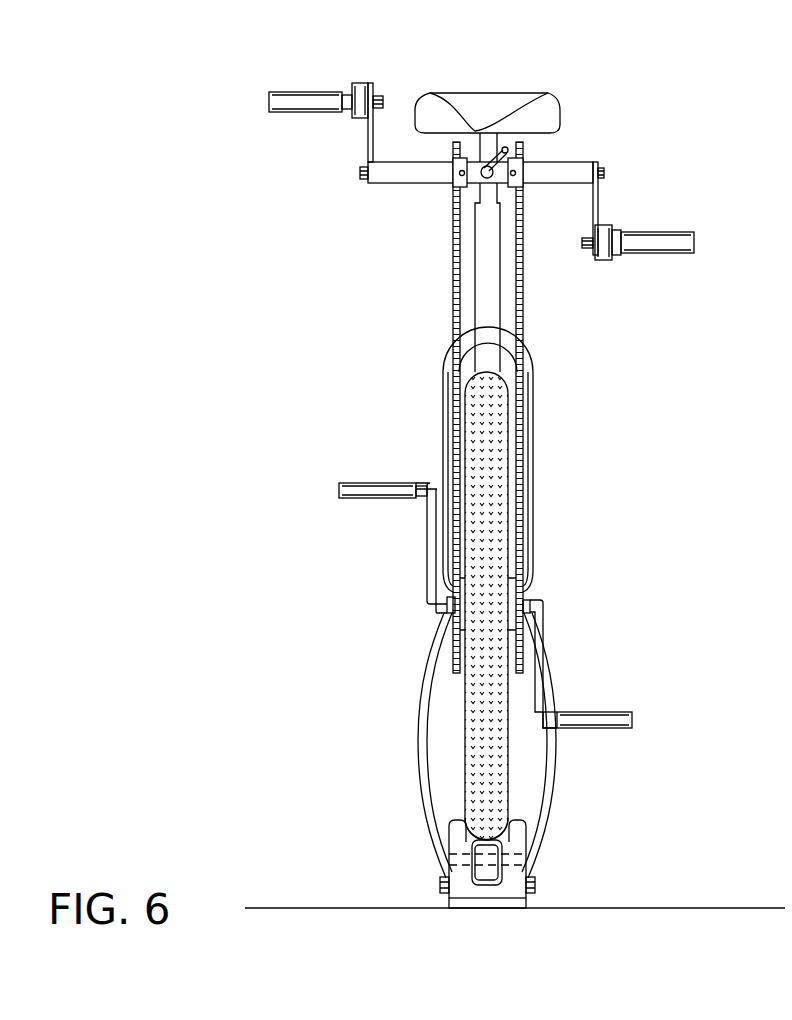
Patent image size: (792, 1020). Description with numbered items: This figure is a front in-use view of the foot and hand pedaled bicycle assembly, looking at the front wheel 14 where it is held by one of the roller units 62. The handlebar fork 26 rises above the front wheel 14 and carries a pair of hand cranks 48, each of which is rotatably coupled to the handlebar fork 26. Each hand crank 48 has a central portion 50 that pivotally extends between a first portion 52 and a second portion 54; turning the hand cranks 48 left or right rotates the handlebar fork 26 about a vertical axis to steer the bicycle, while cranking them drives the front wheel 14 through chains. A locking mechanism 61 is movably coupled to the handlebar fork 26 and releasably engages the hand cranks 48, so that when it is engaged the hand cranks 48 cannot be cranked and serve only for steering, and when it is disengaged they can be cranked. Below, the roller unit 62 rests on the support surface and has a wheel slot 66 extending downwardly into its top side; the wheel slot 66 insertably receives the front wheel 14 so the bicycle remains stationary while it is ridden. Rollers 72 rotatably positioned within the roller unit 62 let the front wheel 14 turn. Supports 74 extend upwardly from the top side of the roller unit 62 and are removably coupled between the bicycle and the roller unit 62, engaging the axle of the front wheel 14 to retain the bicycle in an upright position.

The front wheel 14 is at (482, 425).
The handlebar fork 26 is at (493, 275).
The hand cranks 48 is at (427, 131).
The central portion 50 is at (372, 140).
The first portion 52 is at (417, 187).
The second portion 54 is at (287, 110).
The locking mechanism 61 is at (487, 166).
The roller units 62 is at (560, 876).
The wheel slot 66 is at (498, 812).
The rollers 72 is at (484, 846).
The supports 74 is at (425, 727).